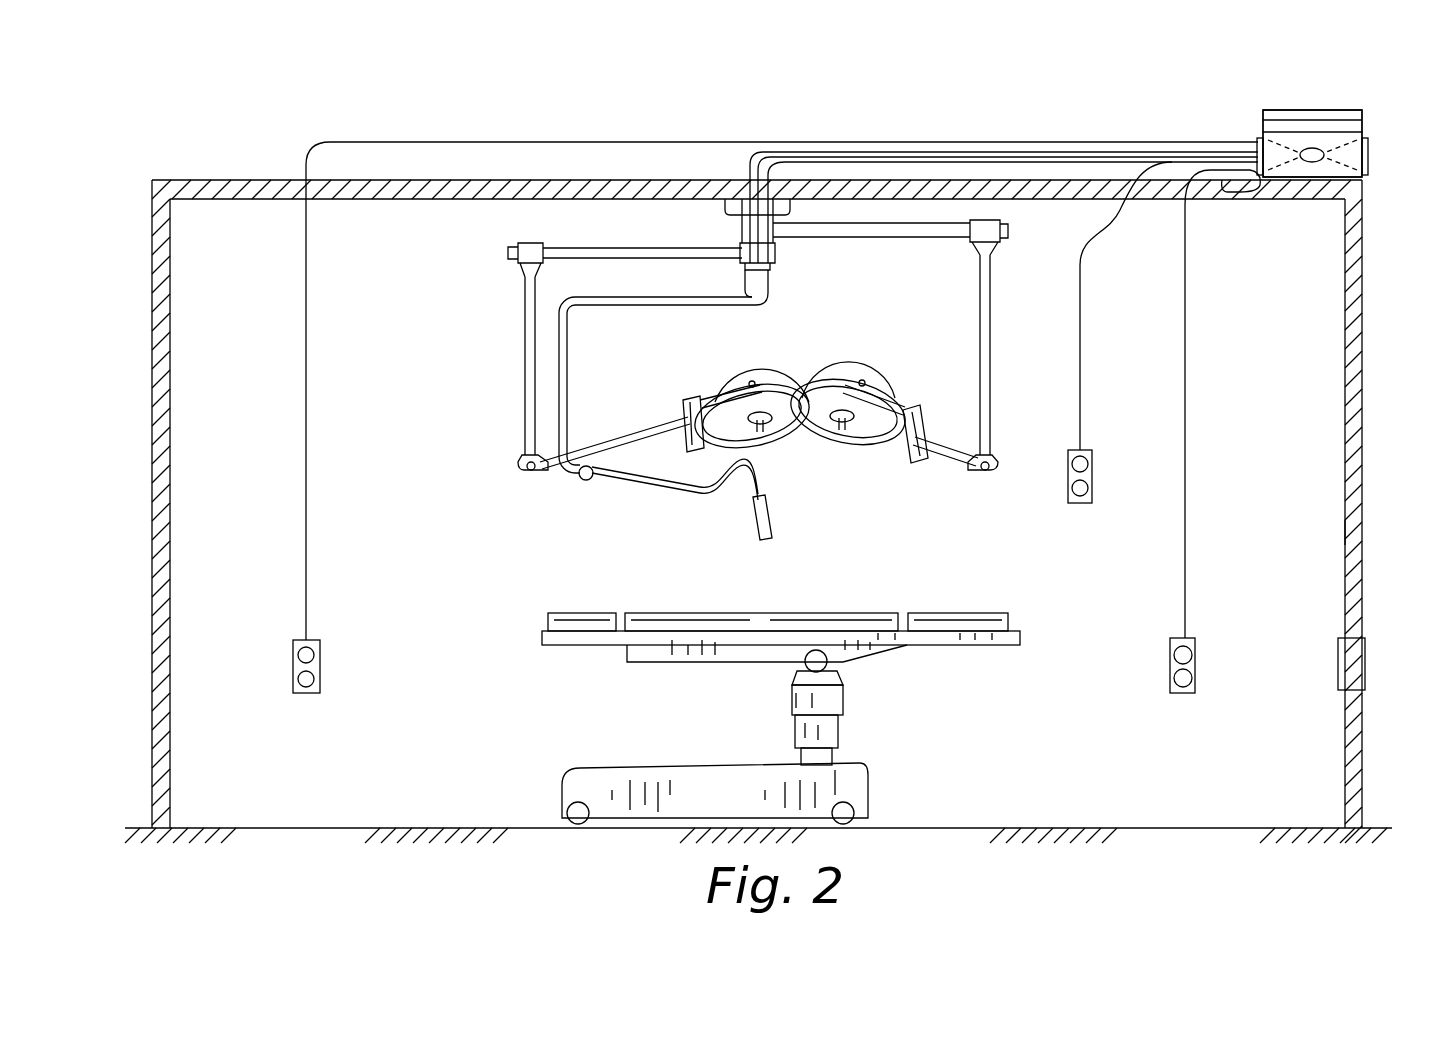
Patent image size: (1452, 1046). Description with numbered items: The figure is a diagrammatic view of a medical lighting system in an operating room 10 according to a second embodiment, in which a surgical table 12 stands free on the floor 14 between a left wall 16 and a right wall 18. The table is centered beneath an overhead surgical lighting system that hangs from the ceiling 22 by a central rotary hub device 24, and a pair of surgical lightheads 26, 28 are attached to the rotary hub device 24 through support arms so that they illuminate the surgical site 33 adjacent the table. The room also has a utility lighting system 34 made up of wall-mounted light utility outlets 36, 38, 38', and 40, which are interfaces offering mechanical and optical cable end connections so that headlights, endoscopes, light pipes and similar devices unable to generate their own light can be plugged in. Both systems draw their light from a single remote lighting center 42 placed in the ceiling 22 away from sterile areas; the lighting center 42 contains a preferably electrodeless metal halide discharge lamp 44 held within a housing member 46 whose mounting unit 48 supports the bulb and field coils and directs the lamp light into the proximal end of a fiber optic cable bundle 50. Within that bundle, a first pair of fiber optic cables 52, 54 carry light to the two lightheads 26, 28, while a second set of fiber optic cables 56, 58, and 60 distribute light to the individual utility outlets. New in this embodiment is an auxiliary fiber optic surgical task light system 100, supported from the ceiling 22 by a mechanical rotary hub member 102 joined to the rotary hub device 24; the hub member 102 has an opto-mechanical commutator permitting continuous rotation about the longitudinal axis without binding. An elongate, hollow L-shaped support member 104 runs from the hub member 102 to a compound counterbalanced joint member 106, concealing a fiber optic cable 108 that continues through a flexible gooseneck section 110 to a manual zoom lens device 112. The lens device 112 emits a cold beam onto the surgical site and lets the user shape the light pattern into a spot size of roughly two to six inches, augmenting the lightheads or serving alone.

The operating room 10 is at (398, 560).
The surgical table 12 is at (975, 648).
The floor 14 is at (932, 826).
The left wall 16 is at (172, 482).
The right wall 18 is at (1348, 372).
The ceiling 22 is at (1228, 198).
The central rotary hub device 24 is at (742, 245).
The first surgical lighthead 26 is at (781, 458).
The second surgical lighthead 28 is at (878, 462).
The surgical site 33 is at (1000, 584).
The utility lighting system 34 is at (328, 722).
The light utility outlet 36 is at (292, 668).
The light utility outlet 38 is at (1215, 649).
The control unit 38' is at (1120, 332).
The light utility outlet 40 is at (1338, 668).
The remote lighting center 42 is at (1378, 156).
The metal halide discharge lamp 44 is at (1318, 148).
The housing member 46 is at (1262, 110).
The mounting unit 48 is at (1305, 122).
The fiber optic cable bundle 50 is at (1207, 130).
The fiber optic cable 52 is at (750, 151).
The fiber optic cable 54 is at (790, 162).
The fiber optic cable 56 is at (450, 141).
The fiber optic cable 58 is at (1186, 385).
The fiber optic cable 60 is at (1345, 532).
The fiber optic surgical task light system 100 is at (636, 508).
The mechanical rotary hub member 102 is at (776, 268).
The L-shaped support member 104 is at (592, 362).
The compound counterbalanced joint member 106 is at (585, 484).
The fiber optic cable 108 is at (770, 300).
The flexible gooseneck section 110 is at (710, 497).
The manual zoom lens device 112 is at (766, 540).